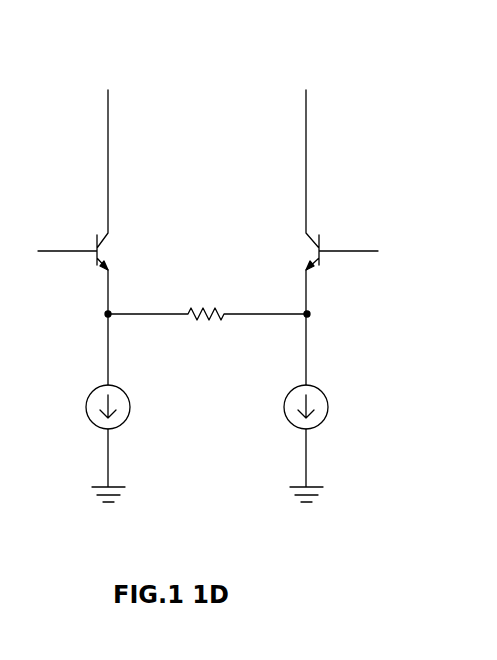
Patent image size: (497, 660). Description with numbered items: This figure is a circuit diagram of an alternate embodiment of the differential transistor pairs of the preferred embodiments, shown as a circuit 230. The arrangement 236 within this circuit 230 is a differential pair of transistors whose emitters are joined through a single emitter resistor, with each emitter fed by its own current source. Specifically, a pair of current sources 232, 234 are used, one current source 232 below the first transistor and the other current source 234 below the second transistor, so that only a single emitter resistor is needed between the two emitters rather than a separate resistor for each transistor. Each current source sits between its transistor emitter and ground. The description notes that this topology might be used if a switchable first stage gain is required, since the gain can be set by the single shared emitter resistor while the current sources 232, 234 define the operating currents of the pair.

The differential pair circuit 230 is at (245, 95).
The degenerated differential pair 236 is at (190, 223).
The current source 232 is at (99, 387).
The current source 234 is at (317, 387).